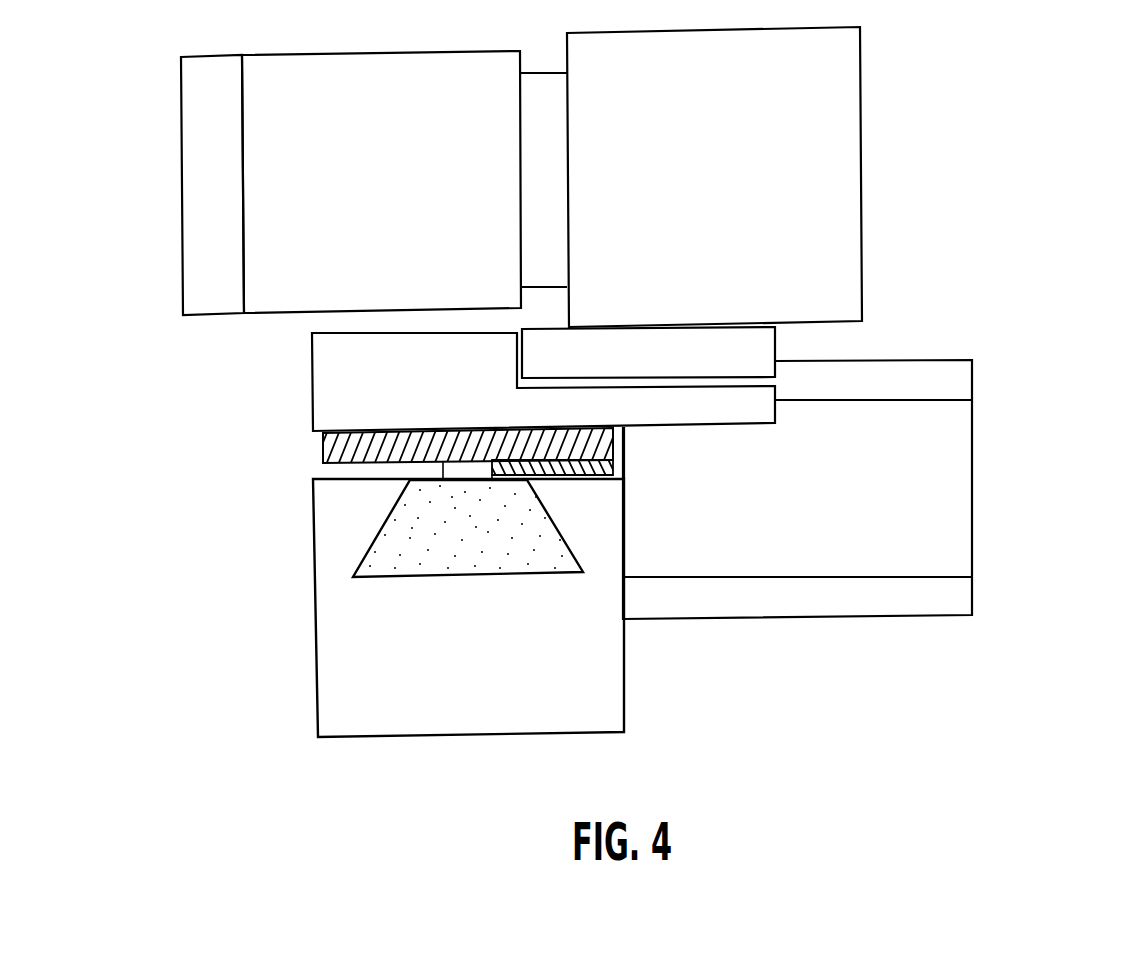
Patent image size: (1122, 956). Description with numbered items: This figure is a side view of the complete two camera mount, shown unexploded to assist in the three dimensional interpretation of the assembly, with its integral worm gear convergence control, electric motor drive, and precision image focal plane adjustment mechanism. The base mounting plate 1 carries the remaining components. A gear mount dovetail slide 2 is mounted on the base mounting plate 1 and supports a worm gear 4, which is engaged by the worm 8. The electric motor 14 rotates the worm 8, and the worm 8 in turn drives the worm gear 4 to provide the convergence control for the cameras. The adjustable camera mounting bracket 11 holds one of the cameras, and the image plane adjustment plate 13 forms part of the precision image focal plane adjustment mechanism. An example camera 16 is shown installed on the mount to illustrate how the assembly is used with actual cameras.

The base mounting plate 1 is at (308, 660).
The gear mount dovetail slide 2 is at (400, 536).
The worm gear 4 is at (320, 448).
The worm 8 is at (597, 467).
The adjustable camera mounting bracket 11 is at (762, 408).
The image plane adjustment plate 13 is at (782, 345).
The electric motor 14 is at (985, 472).
The example camera 16 is at (868, 163).